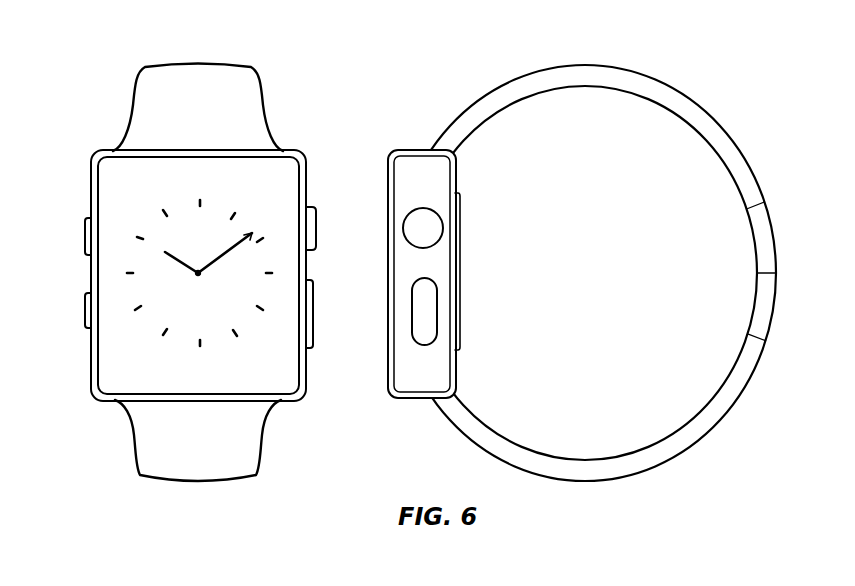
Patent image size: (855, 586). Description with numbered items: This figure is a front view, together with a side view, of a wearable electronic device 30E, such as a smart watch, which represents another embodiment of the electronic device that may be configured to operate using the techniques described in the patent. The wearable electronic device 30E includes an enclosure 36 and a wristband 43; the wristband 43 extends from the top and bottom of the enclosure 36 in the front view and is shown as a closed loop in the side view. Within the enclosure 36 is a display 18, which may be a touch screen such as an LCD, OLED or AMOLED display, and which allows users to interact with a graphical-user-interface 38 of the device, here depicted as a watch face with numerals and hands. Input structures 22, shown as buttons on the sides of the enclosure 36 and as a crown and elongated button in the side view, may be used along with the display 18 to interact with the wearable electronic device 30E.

The wearable electronic device 30E is at (410, 244).
The enclosure 36 is at (307, 270).
The graphical-user-interface 38 is at (264, 173).
The display 18 is at (127, 335).
The input structures 22 is at (84, 238).
The wristband 43 is at (133, 100).